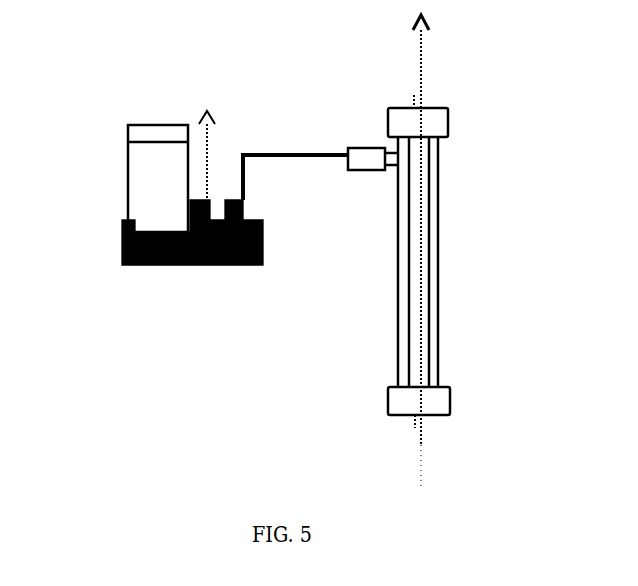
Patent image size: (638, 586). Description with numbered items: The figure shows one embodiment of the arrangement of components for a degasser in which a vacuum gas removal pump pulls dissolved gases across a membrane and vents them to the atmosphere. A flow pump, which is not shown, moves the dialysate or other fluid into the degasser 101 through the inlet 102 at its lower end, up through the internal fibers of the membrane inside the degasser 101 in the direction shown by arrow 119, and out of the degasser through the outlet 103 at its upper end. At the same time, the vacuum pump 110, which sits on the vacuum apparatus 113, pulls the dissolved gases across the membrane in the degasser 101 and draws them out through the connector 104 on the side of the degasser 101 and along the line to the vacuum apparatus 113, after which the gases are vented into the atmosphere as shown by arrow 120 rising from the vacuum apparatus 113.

The degasser 101 is at (438, 255).
The inlet 102 is at (423, 420).
The outlet 103 is at (425, 97).
The connector 104 is at (365, 158).
The vacuum pump 110 is at (148, 182).
The vacuum apparatus 113 is at (192, 259).
The arrow 119 is at (392, 244).
The arrow 120 is at (215, 139).